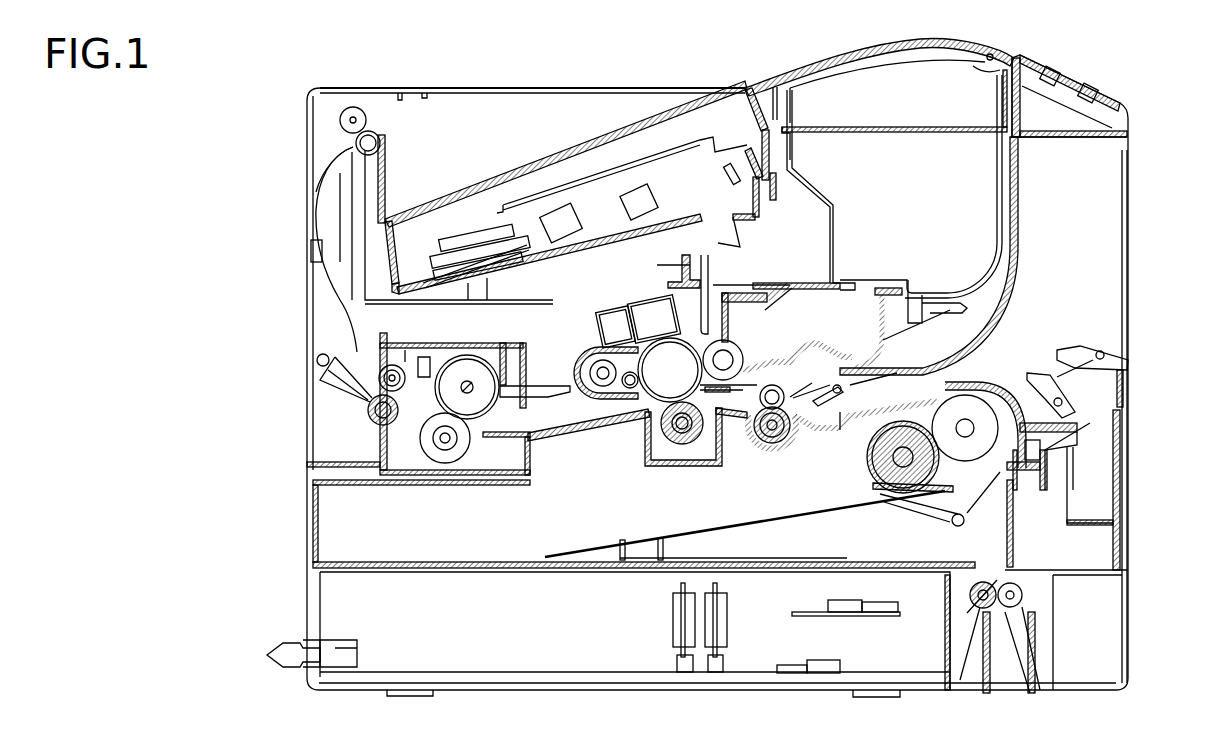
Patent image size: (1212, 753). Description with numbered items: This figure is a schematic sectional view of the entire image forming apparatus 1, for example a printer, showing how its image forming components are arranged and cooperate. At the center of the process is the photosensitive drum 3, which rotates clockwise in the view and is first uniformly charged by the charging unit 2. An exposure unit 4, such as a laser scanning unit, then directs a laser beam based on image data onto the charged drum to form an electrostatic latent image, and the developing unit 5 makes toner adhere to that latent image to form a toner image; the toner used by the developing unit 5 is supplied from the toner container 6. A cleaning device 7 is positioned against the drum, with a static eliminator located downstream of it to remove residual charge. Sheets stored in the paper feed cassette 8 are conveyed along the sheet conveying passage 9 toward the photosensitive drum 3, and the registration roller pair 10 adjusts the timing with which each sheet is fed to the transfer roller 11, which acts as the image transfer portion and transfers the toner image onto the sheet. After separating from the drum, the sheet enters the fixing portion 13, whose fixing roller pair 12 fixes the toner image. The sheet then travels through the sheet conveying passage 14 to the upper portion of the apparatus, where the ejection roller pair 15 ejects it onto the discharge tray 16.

The image forming apparatus 1 is at (1157, 260).
The charging unit 2 is at (665, 313).
The photosensitive drum 3 is at (710, 400).
The exposure unit 4 is at (648, 167).
The developing unit 5 is at (760, 320).
The toner container 6 is at (963, 223).
The cleaning device 7 is at (596, 404).
The paper feed cassette 8 is at (857, 653).
The sheet conveying passage 9 is at (905, 399).
The registration roller pair 10 is at (782, 442).
The transfer roller 11 is at (674, 440).
The fixing roller pair 12 is at (490, 437).
The fixing portion 13 is at (524, 362).
The sheet conveying passage 14 is at (325, 252).
The ejection roller pair 15 is at (368, 114).
The discharge tray 16 is at (577, 143).